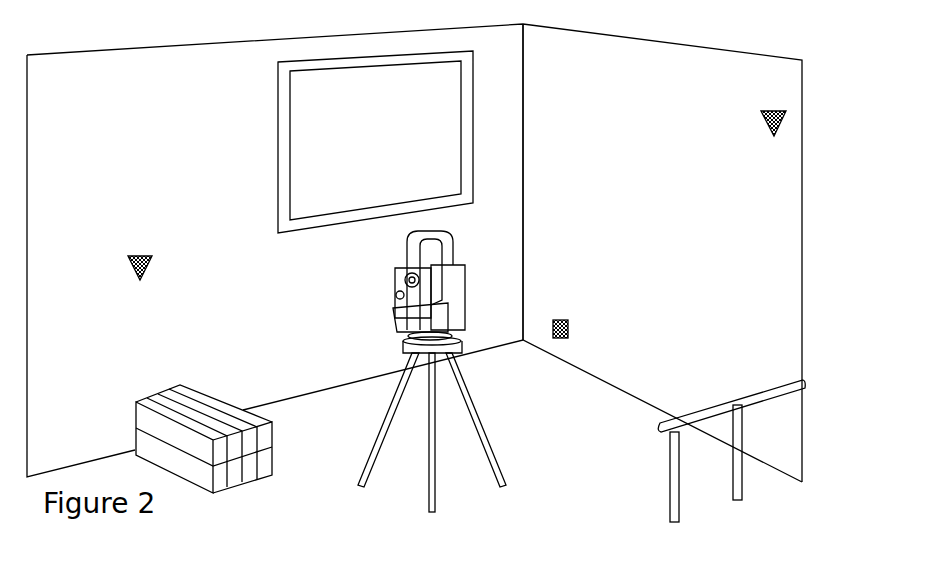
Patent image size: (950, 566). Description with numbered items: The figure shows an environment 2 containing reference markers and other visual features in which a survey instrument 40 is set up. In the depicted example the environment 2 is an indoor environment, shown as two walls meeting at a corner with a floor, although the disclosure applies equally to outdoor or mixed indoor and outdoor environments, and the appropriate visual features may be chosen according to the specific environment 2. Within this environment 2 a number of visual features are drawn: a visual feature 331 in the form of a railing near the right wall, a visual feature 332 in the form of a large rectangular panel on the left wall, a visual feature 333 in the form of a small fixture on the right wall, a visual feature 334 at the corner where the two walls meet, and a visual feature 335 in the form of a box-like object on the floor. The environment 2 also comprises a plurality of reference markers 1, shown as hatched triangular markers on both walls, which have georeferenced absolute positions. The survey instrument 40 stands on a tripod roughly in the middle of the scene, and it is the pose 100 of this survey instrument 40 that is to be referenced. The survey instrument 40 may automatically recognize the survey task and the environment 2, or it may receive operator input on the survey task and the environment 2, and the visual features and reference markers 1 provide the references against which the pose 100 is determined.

The reference markers 1 is at (137, 255).
The environment 2 is at (846, 44).
The survey instrument 40 is at (385, 235).
The pose 100 is at (450, 470).
The visual feature 331 is at (726, 400).
The visual feature 332 is at (290, 71).
The visual feature 333 is at (558, 320).
The visual feature 334 is at (525, 27).
The visual feature 335 is at (187, 380).